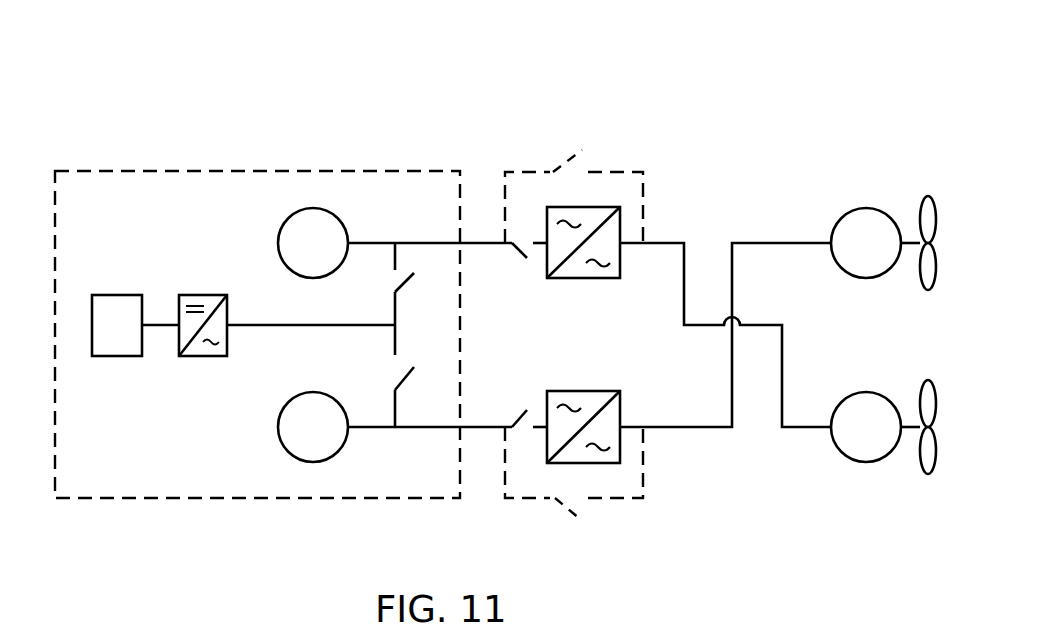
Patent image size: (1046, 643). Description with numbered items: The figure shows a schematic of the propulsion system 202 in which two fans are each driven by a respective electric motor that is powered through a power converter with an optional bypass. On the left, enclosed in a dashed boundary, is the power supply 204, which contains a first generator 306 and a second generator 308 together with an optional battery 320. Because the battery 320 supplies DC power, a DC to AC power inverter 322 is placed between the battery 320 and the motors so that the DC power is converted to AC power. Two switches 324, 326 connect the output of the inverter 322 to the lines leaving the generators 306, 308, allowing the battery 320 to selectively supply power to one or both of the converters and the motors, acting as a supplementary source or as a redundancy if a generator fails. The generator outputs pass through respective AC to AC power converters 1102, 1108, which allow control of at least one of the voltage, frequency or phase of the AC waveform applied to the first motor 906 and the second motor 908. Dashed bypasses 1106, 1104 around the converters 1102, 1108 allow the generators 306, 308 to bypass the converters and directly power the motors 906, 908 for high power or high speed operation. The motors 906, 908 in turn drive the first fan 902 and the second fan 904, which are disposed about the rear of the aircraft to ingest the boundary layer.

The propulsion system 202 is at (704, 66).
The power supply 204 is at (175, 170).
The first generator 306 is at (310, 208).
The second generator 308 is at (309, 462).
The battery 320 is at (115, 294).
The DC to AC power inverter 322 is at (200, 294).
The switch 324 is at (407, 273).
The switch 326 is at (412, 372).
The first fan 902 is at (928, 196).
The second fan 904 is at (928, 380).
The first motor 906 is at (862, 207).
The second motor 908 is at (862, 391).
The AC to AC power converter 1102 is at (597, 206).
The bypass 1104 is at (633, 500).
The bypass 1106 is at (538, 170).
The AC to AC power converter 1108 is at (580, 390).